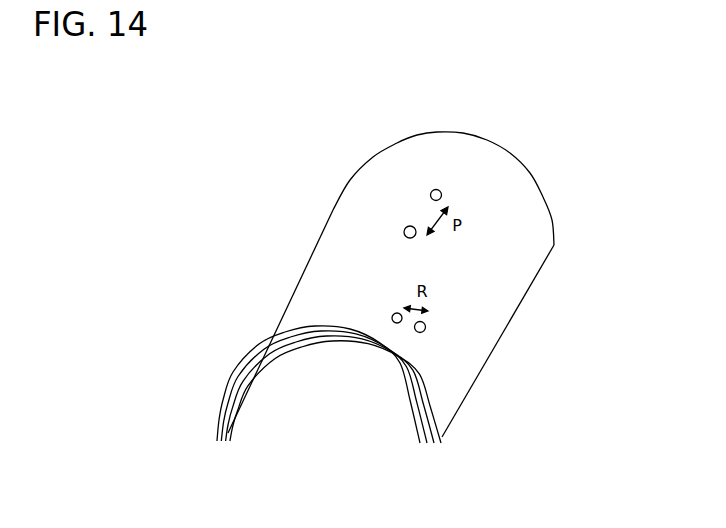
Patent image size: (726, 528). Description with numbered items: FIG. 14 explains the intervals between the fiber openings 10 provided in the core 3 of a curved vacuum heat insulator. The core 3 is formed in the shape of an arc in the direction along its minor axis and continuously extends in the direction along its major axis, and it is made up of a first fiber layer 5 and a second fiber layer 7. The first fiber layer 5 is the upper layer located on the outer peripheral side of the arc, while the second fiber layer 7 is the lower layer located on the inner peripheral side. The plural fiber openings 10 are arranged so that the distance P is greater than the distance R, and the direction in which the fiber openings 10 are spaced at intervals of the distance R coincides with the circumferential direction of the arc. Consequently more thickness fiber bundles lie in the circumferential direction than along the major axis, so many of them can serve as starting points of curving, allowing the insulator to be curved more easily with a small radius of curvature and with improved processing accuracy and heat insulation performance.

The core 3 is at (391, 248).
The first fiber layer 5 is at (310, 360).
The second fiber layer 7 is at (333, 424).
The fiber openings 10 is at (381, 150).